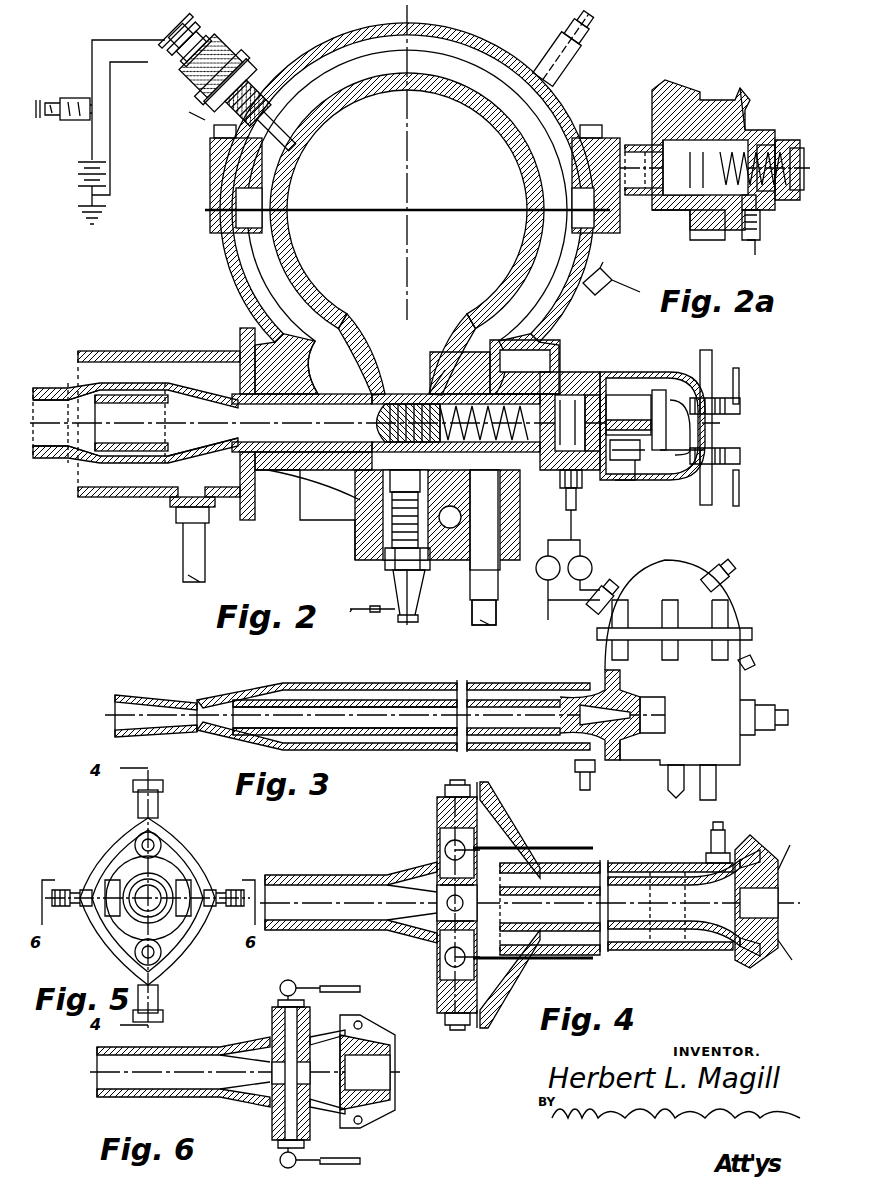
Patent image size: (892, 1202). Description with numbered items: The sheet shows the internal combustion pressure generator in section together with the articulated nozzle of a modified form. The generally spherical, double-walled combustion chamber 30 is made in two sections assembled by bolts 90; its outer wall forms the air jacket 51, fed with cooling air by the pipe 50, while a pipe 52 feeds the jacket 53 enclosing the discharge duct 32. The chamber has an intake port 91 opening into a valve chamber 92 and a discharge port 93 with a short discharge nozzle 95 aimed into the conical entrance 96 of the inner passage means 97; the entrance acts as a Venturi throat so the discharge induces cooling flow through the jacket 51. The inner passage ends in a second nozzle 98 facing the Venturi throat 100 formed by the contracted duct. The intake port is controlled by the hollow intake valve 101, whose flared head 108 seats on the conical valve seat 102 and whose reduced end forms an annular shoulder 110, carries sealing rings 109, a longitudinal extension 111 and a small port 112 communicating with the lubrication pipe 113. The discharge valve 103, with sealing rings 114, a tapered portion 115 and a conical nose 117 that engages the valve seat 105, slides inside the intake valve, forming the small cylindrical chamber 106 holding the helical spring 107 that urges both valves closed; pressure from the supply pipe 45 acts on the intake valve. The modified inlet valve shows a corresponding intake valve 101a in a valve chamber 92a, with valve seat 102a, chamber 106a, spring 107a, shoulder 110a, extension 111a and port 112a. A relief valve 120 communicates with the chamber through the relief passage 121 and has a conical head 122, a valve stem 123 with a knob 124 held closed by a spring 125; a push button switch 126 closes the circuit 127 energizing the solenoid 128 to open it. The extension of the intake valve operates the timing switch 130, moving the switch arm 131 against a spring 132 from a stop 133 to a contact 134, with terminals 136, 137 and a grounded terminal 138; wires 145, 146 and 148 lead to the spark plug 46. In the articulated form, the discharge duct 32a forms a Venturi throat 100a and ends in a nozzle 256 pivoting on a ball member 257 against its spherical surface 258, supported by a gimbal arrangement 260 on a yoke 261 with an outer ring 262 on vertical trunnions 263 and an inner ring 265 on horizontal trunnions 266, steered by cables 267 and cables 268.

In FIG. 2, the combustion chamber 30 is at (430, 26).
In FIG. 2A, the combustion chamber 30 is at (745, 85).
In FIG. 3, the combustion chamber 30 is at (746, 604).
In FIG. 4, the combustion chamber 30 is at (752, 965).
In FIG. 2, the discharge duct 32 is at (118, 300).
In FIG. 3, the discharge duct 32 is at (300, 678).
In FIG. 4, the discharge duct 32a is at (655, 953).
In FIG. 2, the supply pipe 45 is at (498, 588).
In FIG. 3, the supply pipe 45 is at (718, 785).
In FIG. 2, the spark plug 46 is at (418, 598).
In FIG. 2, the pipe 50 is at (555, 35).
In FIG. 3, the pipe 50 is at (733, 572).
In FIG. 2, the air jacket 51 is at (385, 25).
In FIG. 2, the pipe 52 is at (183, 567).
In FIG. 3, the pipe 52 is at (592, 782).
In FIG. 4, the pipe 52 is at (725, 830).
In FIG. 2, the jacket 53 is at (162, 351).
In FIG. 3, the jacket 53 is at (345, 683).
In FIG. 2, the bolts 90 is at (212, 140).
In FIG. 2, the intake port 91 is at (460, 560).
In FIG. 2A, the intake port 91 is at (692, 230).
In FIG. 2, the valve chamber 92 is at (455, 330).
In FIG. 2A, the valve housing (modified) 92a is at (685, 100).
In FIG. 2, the discharge port 93 is at (330, 428).
In FIG. 2, the discharge nozzle 95 is at (310, 380).
In FIG. 3, the discharge nozzle 95 is at (640, 712).
In FIG. 4, the discharge nozzle 95 is at (770, 895).
In FIG. 2, the conical entrance 96 is at (205, 452).
In FIG. 3, the conical entrance 96 is at (585, 697).
In FIG. 4, the conical entrance 96 is at (725, 950).
In FIG. 2, the inner passage means 97 is at (80, 462).
In FIG. 3, the inner passage means 97 is at (410, 697).
In FIG. 4, the inner passage means 97 is at (648, 862).
In FIG. 3, the second nozzle 98 is at (328, 735).
In FIG. 4, the second nozzle 98 is at (558, 935).
In FIG. 3, the Venturi throat 100 is at (210, 700).
In FIG. 4, the Venturi throat 100a is at (510, 862).
In FIG. 2, the intake valve 101 is at (432, 380).
In FIG. 2A, the intake valve 101a is at (660, 135).
In FIG. 2, the valve seat 102 is at (470, 345).
In FIG. 2A, the valve seat 102a is at (665, 215).
In FIG. 2, the discharge valve 103 is at (440, 394).
In FIG. 2A, the discharge valve 103 is at (640, 145).
In FIG. 2, the valve seat 105 is at (372, 418).
In FIG. 2, the small cylindrical chamber 106 is at (570, 372).
In FIG. 2A, the small cylindrical chamber 106a is at (665, 196).
In FIG. 2, the helical spring 107 is at (435, 430).
In FIG. 2A, the helical spring 107a is at (750, 150).
In FIG. 2, the flared head 108 is at (372, 485).
In FIG. 2, the sealing rings 109 is at (595, 392).
In FIG. 2, the annular shoulder 110 is at (484, 470).
In FIG. 2A, the annular shoulder 110a is at (745, 240).
In FIG. 2, the longitudinal extension 111 is at (628, 413).
In FIG. 2A, the longitudinal extension 111a is at (772, 200).
In FIG. 2, the small port 112 is at (572, 490).
In FIG. 2A, the small port 112a is at (765, 215).
In FIG. 2, the lubrication pipe 113 is at (588, 520).
In FIG. 2A, the lubrication pipe 113 is at (750, 252).
In FIG. 2, the sealing rings 114 is at (520, 348).
In FIG. 2, the tapered portion 115 is at (395, 500).
In FIG. 2, the conical nose 117 is at (320, 475).
In FIG. 2, the relief valve 120 is at (238, 6).
In FIG. 2, the relief passage 121 is at (298, 140).
In FIG. 2, the conical head 122 is at (262, 52).
In FIG. 2, the valve stem 123 is at (200, 45).
In FIG. 2, the knob 124 is at (170, 108).
In FIG. 2, the spring 125 is at (205, 120).
In FIG. 2, the push button switch 126 is at (78, 98).
In FIG. 2, the circuit 127 is at (105, 40).
In FIG. 2, the solenoid 128 is at (165, 85).
In FIG. 2, the pressure-responsive timing switch 130 is at (630, 372).
In FIG. 2A, the pressure-responsive timing switch 130 is at (778, 140).
In FIG. 2, the switch arm 131 is at (655, 450).
In FIG. 2, the spring 132 is at (690, 370).
In FIG. 2, the stop 133 is at (628, 480).
In FIG. 2, the contact 134 is at (665, 455).
In FIG. 2, the terminal 136 is at (740, 457).
In FIG. 2, the terminal 137 is at (740, 407).
In FIG. 2, the terminal 138 is at (608, 276).
In FIG. 2, the wire 145 is at (740, 375).
In FIG. 2, the wire 146 is at (740, 492).
In FIG. 2, the wire 148 is at (360, 603).
In FIG. 5, the nozzle 256 is at (170, 880).
In FIG. 4, the nozzle 256 is at (280, 930).
In FIG. 6, the nozzle 256 is at (105, 1097).
In FIG. 4, the ball member 257 is at (435, 925).
In FIG. 6, the ball member 257 is at (268, 1100).
In FIG. 4, the spherical surface 258 is at (440, 880).
In FIG. 5, the gimbal arrangement 260 is at (178, 838).
In FIG. 4, the yoke 261 is at (500, 810).
In FIG. 6, the yoke 261 is at (352, 1071).
In FIG. 5, the outer ring 262 is at (112, 845).
In FIG. 4, the outer ring 262 is at (437, 825).
In FIG. 6, the outer ring 262 is at (306, 1012).
In FIG. 4, the vertical trunnions 263 is at (443, 790).
In FIG. 5, the inner ring 265 is at (170, 940).
In FIG. 4, the inner ring 265 is at (440, 955).
In FIG. 6, the horizontal trunnions 266 is at (272, 1030).
In FIG. 4, the cables 267 is at (585, 848).
In FIG. 6, the cables 268 is at (320, 986).